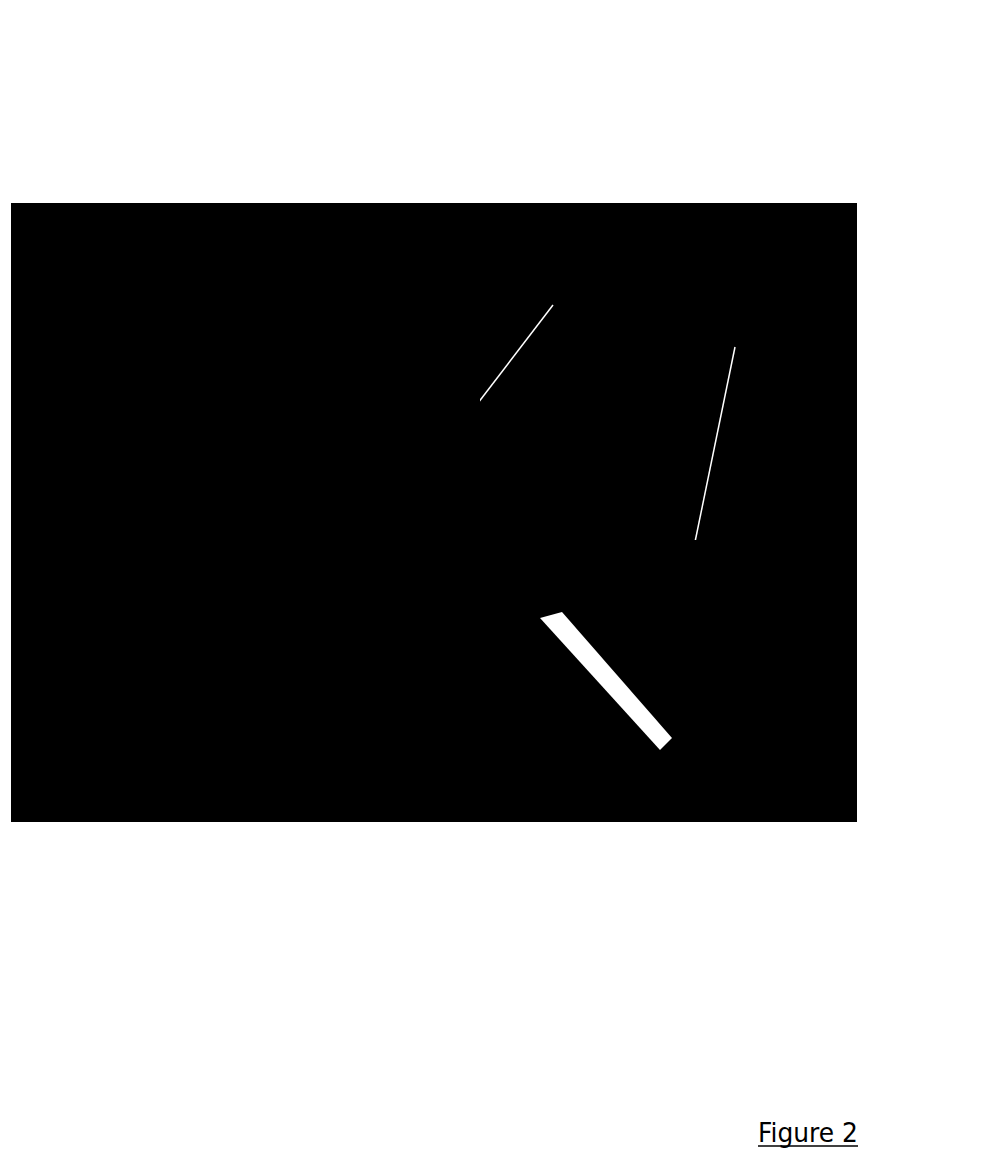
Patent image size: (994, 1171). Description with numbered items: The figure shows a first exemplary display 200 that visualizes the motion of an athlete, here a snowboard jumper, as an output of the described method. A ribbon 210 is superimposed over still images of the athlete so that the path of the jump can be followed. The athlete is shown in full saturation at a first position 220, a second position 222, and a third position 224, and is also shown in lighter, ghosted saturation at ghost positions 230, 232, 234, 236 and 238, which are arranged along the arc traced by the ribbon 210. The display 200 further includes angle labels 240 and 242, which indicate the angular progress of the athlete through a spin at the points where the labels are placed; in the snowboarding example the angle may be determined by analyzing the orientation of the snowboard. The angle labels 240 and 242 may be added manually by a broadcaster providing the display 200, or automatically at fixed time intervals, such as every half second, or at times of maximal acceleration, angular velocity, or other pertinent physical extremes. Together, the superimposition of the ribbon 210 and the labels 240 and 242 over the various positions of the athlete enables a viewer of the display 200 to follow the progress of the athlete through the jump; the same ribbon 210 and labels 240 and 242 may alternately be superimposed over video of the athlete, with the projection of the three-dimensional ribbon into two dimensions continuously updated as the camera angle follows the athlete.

The display 200 is at (170, 44).
The ribbon 210 is at (459, 510).
The first position 220 is at (702, 558).
The second position 222 is at (459, 395).
The third position 224 is at (147, 507).
The ghost position 230 is at (633, 477).
The ghost position 232 is at (552, 420).
The ghost position 234 is at (373, 407).
The ghost position 236 is at (318, 410).
The ghost position 238 is at (247, 442).
The angle label 240 is at (575, 263).
The angle label 242 is at (753, 297).